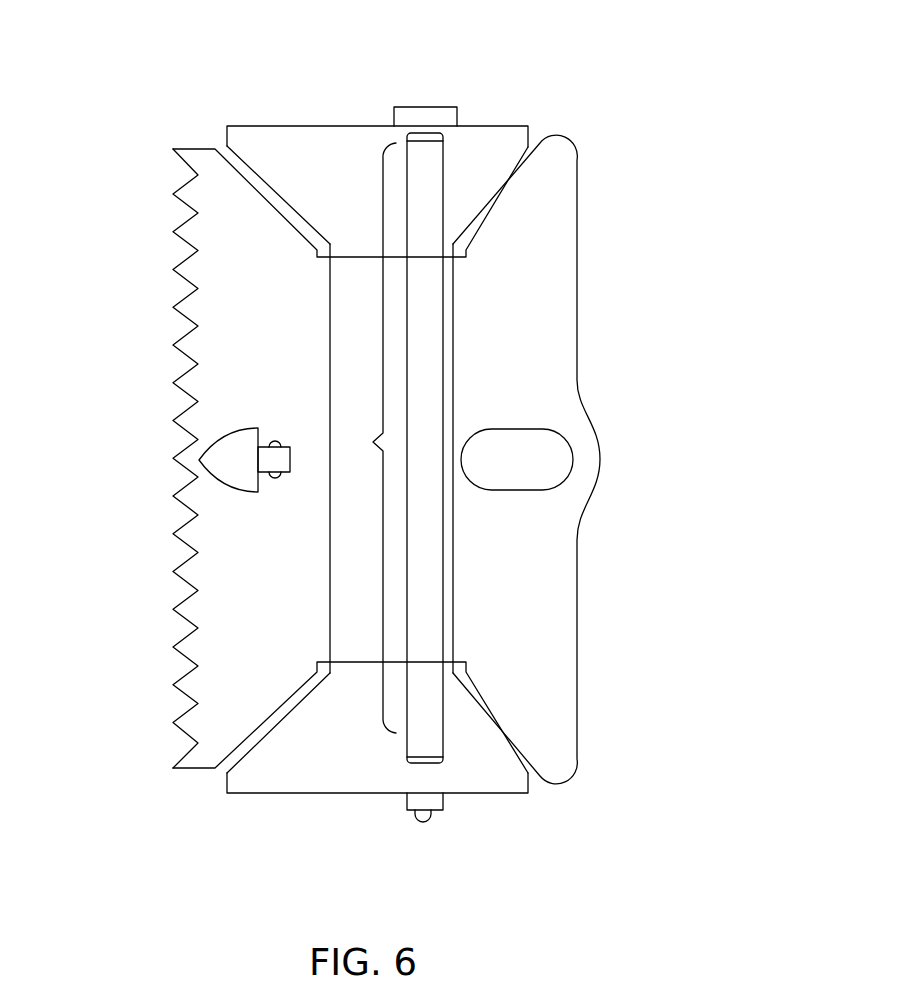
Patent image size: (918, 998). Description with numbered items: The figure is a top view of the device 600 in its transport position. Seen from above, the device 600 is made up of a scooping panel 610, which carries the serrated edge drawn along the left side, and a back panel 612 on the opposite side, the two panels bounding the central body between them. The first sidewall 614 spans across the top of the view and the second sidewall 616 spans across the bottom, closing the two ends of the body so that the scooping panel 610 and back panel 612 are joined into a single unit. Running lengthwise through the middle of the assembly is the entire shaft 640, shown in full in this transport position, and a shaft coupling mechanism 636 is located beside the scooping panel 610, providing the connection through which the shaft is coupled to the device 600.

The device 600 is at (595, 102).
The scooping panel 610 is at (225, 597).
The back panel 612 is at (553, 589).
The first sidewall 614 is at (338, 152).
The second sidewall 616 is at (338, 768).
The shaft coupling mechanism 636 is at (205, 460).
The entire shaft 640 is at (373, 442).